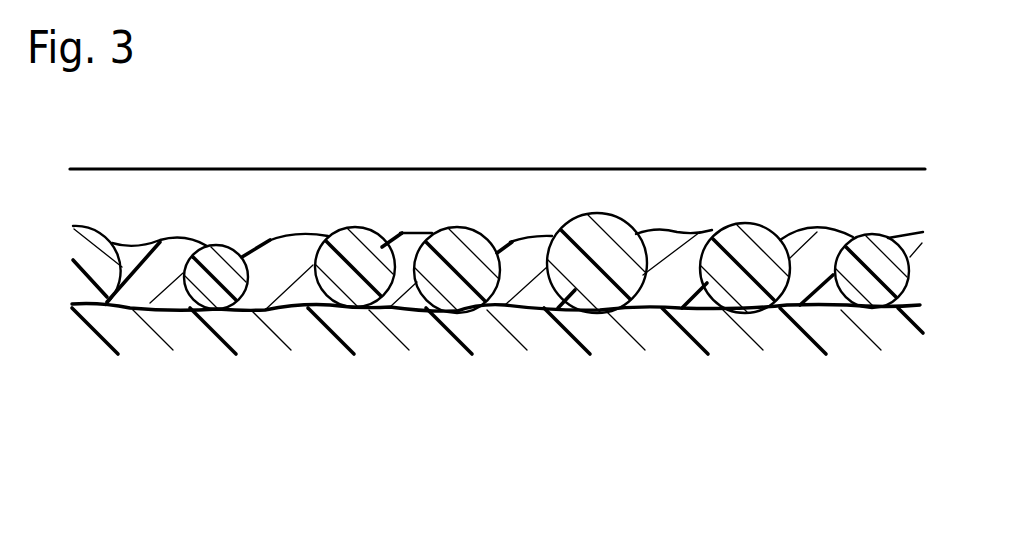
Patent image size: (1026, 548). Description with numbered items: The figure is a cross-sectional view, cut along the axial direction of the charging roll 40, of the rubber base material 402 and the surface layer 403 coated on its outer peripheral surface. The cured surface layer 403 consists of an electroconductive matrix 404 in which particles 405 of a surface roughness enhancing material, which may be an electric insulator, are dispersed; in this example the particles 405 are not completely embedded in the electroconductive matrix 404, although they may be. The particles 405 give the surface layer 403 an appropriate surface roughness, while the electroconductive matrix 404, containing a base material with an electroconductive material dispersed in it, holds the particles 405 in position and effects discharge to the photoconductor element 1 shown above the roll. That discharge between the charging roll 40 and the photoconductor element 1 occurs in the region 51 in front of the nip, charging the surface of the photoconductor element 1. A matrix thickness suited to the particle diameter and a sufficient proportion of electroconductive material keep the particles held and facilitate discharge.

The photoconductor element 1 is at (72, 170).
The charging roll 40 is at (63, 218).
The region in front of the nip 51 is at (280, 203).
The rubber base material 402 is at (163, 318).
The surface layer 403 is at (253, 308).
The electroconductive matrix 404 is at (657, 293).
The particles of roughness enhancing material 405 is at (560, 290).